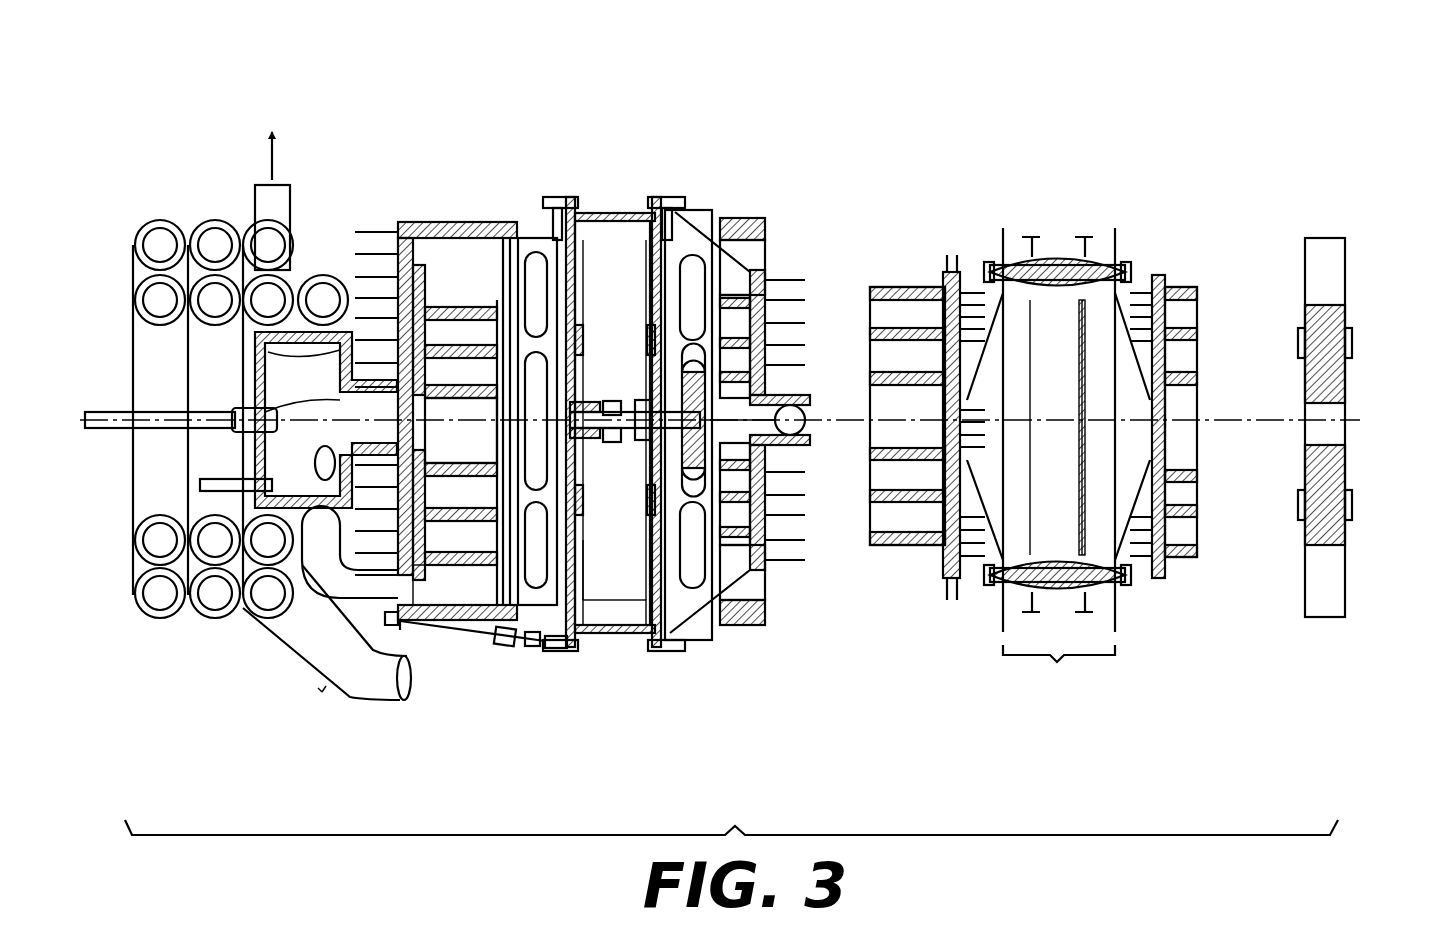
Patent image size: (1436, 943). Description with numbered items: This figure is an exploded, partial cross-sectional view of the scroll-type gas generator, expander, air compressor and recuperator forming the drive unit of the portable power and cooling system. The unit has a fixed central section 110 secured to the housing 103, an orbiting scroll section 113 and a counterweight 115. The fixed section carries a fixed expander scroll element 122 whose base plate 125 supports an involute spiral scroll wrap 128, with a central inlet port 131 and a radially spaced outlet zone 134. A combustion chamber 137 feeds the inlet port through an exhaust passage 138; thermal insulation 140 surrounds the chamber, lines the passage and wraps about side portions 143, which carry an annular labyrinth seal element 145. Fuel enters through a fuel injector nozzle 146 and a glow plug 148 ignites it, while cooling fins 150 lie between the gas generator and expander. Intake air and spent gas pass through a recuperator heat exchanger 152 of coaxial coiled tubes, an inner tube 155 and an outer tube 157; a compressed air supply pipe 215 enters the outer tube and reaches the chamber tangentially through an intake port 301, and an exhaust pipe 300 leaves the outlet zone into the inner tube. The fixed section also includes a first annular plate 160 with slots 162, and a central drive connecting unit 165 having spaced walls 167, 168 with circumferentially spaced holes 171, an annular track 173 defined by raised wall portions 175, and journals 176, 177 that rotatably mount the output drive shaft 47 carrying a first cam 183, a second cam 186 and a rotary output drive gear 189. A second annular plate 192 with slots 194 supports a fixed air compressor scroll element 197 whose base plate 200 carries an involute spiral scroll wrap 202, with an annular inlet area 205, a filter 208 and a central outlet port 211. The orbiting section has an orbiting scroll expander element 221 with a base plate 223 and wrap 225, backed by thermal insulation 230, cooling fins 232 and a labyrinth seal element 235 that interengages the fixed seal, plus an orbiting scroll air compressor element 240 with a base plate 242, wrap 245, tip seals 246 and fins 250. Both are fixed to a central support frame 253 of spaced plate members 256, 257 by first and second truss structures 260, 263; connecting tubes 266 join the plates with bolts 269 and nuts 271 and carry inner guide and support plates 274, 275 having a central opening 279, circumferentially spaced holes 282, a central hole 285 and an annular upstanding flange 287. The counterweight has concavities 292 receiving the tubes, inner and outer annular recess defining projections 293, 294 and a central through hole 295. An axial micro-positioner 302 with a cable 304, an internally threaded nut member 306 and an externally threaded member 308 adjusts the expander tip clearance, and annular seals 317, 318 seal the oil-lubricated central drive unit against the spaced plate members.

The output drive shaft 47 is at (700, 420).
The housing 103 is at (442, 220).
The fixed central section 110 is at (617, 195).
The orbiting scroll section 113 is at (1088, 228).
The counterweight 115 is at (1325, 238).
The fixed expander scroll element 122 is at (420, 632).
The base plate 125 is at (290, 280).
The involute spiral scroll wrap 128 is at (450, 307).
The central inlet port 131 is at (420, 430).
The outlet zone 134 is at (469, 585).
The combustion chamber 137 is at (326, 420).
The exhaust passage 138 is at (334, 414).
The thermal insulation 140 is at (250, 410).
The side portions 143 is at (405, 222).
The annular labyrinth seal element 145 is at (506, 240).
The fuel injector nozzle 146 is at (240, 412).
The glow plug 148 is at (270, 510).
The cooling fins 150 is at (390, 232).
The recuperator heat exchanger 152 is at (160, 213).
The inner tube 155 is at (160, 592).
The outer tube 157 is at (215, 600).
The first annular plate 160 is at (525, 250).
The slots 162 is at (540, 292).
The central drive connecting unit 165 is at (616, 650).
The spaced wall 167 is at (576, 548).
The spaced wall 168 is at (650, 545).
The circumferentially spaced holes 171 is at (590, 258).
The annular track 173 is at (580, 338).
The raised wall portions 175 is at (588, 350).
The journal 176 is at (648, 455).
The journal 177 is at (603, 405).
The first cam 183 is at (608, 442).
The second cam 186 is at (638, 400).
The rotary output drive gear 189 is at (705, 460).
The second annular plate 192 is at (672, 642).
The slots 194 is at (705, 572).
The fixed air compressor scroll element 197 is at (770, 275).
The base plate 200 is at (785, 292).
The involute spiral scroll wrap 202 is at (746, 262).
The annular inlet area 205 is at (765, 618).
The filter 208 is at (740, 626).
The central outlet port 211 is at (792, 432).
The compressed air supply pipe 215 is at (800, 412).
The orbiting scroll expander element 221 is at (928, 284).
The base plate 223 is at (945, 578).
The involute spiral scroll wrap 225 is at (895, 285).
The thermal insulation 230 is at (950, 262).
The cooling fins 232 is at (1003, 632).
The labyrinth seal element 235 is at (958, 602).
The orbiting scroll air compressor element 240 is at (1182, 284).
The base plate 242 is at (1197, 480).
The involute spiral scroll wrap 245 is at (1197, 335).
The tip seals 246 is at (1197, 360).
The fins 250 is at (1165, 580).
The central support frame 253 is at (1059, 664).
The spaced plate member 256 is at (1003, 228).
The spaced plate member 257 is at (1116, 228).
The first truss structure 260 is at (978, 372).
The second truss structure 263 is at (1140, 355).
The connecting tubes 266 is at (1057, 262).
The bolts 269 is at (1118, 632).
The nuts 271 is at (1158, 275).
The inner guide and support plate 274 is at (948, 318).
The inner guide and support plate 275 is at (1200, 383).
The central opening 279 is at (1025, 385).
The circumferentially spaced holes 282 is at (1197, 520).
The central hole 285 is at (1082, 432).
The annular upstanding flange 287 is at (1088, 440).
The concavities 292 is at (1332, 278).
The inner annular recess defining projection 293 is at (1347, 348).
The outer annular recess defining projection 294 is at (1305, 400).
The central through hole 295 is at (1335, 420).
The exhaust pipe 300 is at (438, 600).
The intake port 301 is at (200, 483).
The axial micro-positioner 302 is at (430, 642).
The cable 304 is at (485, 632).
The internally threaded nut member 306 is at (527, 648).
The externally threaded member 308 is at (550, 648).
The annular seal 317 is at (568, 197).
The annular seal 318 is at (674, 225).